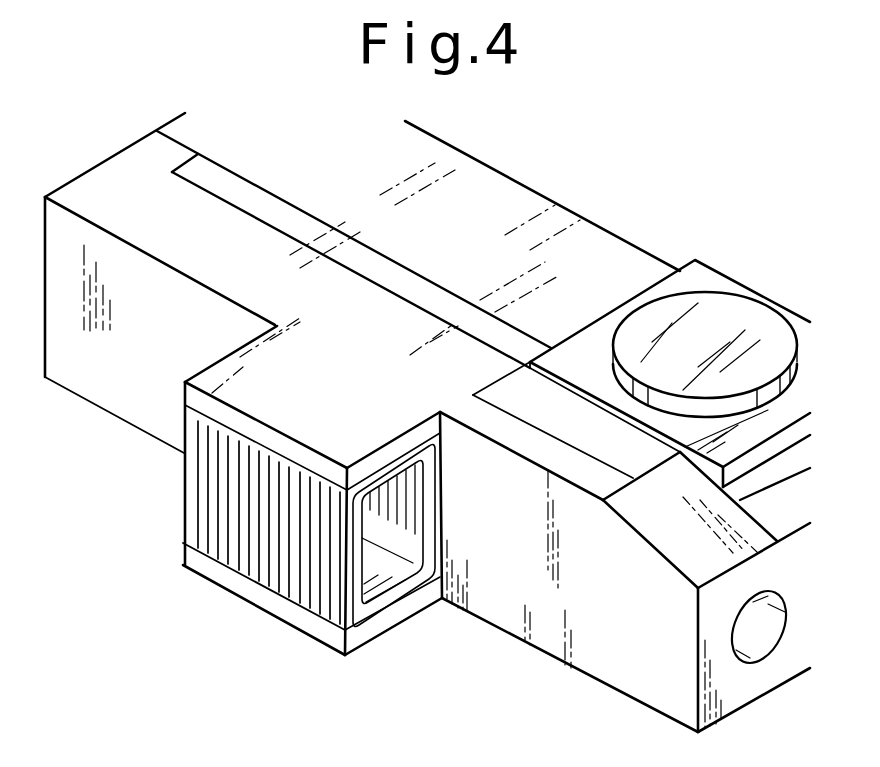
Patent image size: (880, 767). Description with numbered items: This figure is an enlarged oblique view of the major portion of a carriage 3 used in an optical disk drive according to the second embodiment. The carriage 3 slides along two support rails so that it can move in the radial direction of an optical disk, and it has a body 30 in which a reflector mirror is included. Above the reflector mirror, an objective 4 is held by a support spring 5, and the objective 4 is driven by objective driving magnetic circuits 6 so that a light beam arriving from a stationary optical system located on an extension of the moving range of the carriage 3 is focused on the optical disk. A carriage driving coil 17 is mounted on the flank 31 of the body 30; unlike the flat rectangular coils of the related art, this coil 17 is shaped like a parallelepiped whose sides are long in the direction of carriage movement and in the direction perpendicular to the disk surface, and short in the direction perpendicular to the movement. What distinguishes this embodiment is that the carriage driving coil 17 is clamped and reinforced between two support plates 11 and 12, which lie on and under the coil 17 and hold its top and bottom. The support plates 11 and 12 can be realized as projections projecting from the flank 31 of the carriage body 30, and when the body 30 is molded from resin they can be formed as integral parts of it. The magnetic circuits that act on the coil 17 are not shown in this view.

The carriage 3 is at (604, 169).
The objective 4 is at (751, 340).
The support spring 5 is at (497, 233).
The objective driving magnetic circuits 6 is at (570, 413).
The support plate 11 is at (267, 395).
The support plate 12 is at (265, 610).
The carriage driving coil 17 is at (217, 493).
The body 30 is at (737, 685).
The flank 31 is at (608, 626).